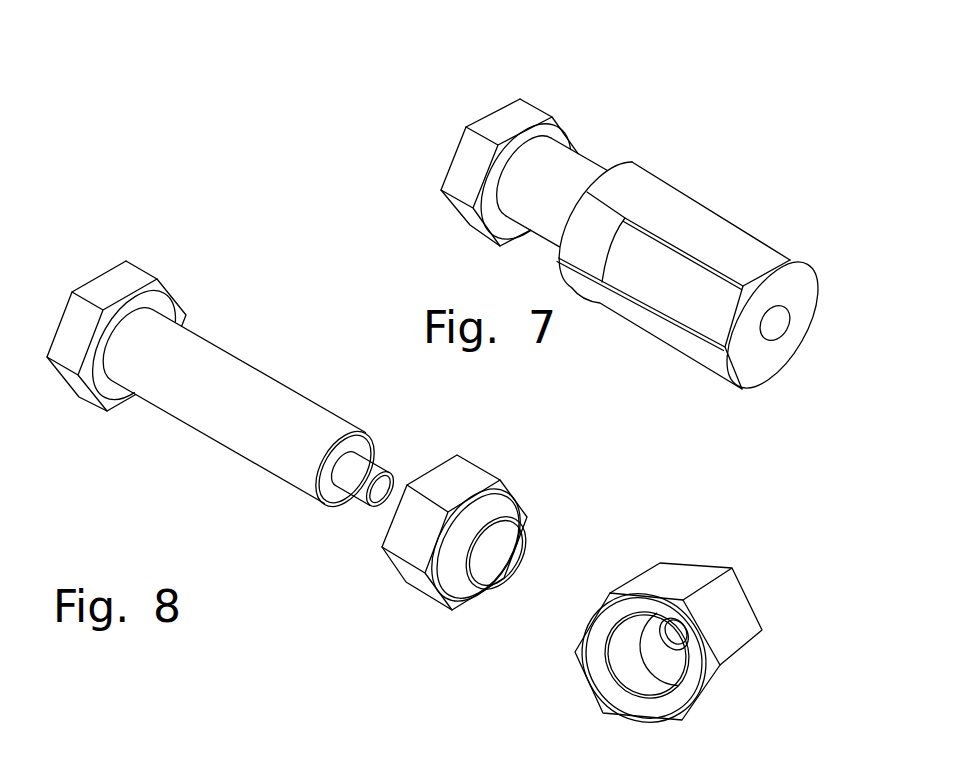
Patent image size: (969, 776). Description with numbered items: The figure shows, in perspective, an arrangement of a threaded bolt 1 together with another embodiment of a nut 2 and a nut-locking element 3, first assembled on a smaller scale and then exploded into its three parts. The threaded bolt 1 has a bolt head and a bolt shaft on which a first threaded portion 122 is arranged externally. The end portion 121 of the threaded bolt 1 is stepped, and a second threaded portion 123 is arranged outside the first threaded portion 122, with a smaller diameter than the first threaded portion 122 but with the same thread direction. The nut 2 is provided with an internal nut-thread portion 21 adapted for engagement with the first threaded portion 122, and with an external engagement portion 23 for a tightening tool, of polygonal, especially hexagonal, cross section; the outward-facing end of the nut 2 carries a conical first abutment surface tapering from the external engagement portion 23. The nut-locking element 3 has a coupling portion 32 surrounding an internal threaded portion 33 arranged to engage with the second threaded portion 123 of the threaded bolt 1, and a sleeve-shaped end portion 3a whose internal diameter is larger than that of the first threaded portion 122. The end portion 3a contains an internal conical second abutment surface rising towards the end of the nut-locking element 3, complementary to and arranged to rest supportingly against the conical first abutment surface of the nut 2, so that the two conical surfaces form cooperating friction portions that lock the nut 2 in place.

In FIG. 7, the threaded bolt 1 is at (413, 127).
In FIG. 8, the threaded bolt 1 is at (213, 303).
In FIG. 7, the nut 2 is at (670, 178).
In FIG. 8, the nut 2 is at (393, 613).
In FIG. 7, the nut-locking element 3 is at (765, 225).
In FIG. 8, the nut-locking element 3 is at (742, 546).
In FIG. 8, the end portion 121 is at (393, 465).
In FIG. 8, the first threaded portion 122 is at (203, 430).
In FIG. 8, the second threaded portion 123 is at (347, 497).
In FIG. 8, the nut-thread portion 21 is at (492, 568).
In FIG. 8, the external engagement portion 23 is at (385, 568).
In FIG. 8, the coupling portion 32 is at (733, 613).
In FIG. 8, the threaded portion 33 is at (668, 636).
In FIG. 8, the sleeve-shaped end portion 3a is at (658, 685).